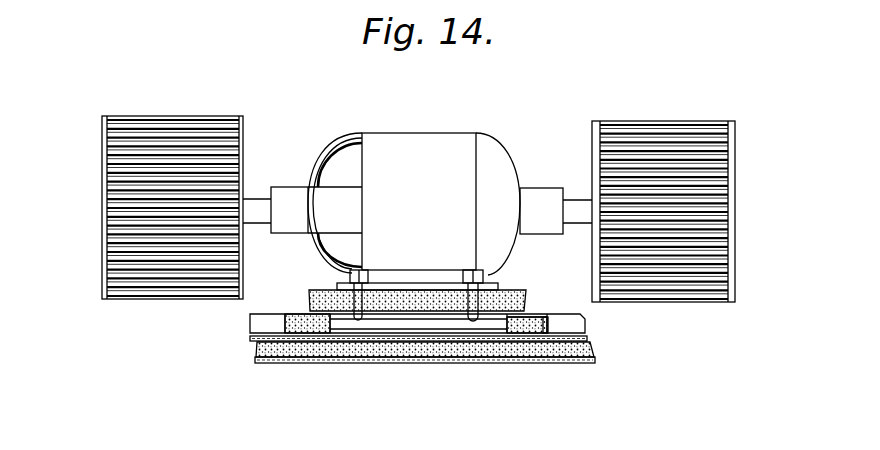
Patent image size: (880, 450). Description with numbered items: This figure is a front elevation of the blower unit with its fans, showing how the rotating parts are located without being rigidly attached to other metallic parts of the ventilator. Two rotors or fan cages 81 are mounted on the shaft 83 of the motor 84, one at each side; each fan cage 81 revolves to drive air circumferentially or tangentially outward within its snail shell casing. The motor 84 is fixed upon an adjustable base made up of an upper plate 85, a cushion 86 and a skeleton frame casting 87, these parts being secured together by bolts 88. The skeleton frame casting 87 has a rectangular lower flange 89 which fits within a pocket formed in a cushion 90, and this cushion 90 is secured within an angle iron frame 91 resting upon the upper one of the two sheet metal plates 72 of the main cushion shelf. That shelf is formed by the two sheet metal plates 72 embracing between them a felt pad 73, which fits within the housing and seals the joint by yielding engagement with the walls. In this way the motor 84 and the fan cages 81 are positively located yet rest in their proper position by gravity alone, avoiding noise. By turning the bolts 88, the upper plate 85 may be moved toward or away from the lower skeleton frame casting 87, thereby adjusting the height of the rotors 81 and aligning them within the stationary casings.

The sheet metal plates 72 is at (252, 338).
The felt pad 73 is at (257, 348).
The fan cage 81 is at (103, 215).
The shaft 83 is at (253, 212).
The motor 84 is at (402, 160).
The upper plate 85 is at (507, 292).
The cushion 86 is at (526, 303).
The skeleton frame casting 87 is at (435, 314).
The bolts 88 is at (361, 268).
The rectangular lower flange 89 is at (502, 333).
The cushion 90 is at (533, 320).
The angle iron frame 91 is at (252, 327).